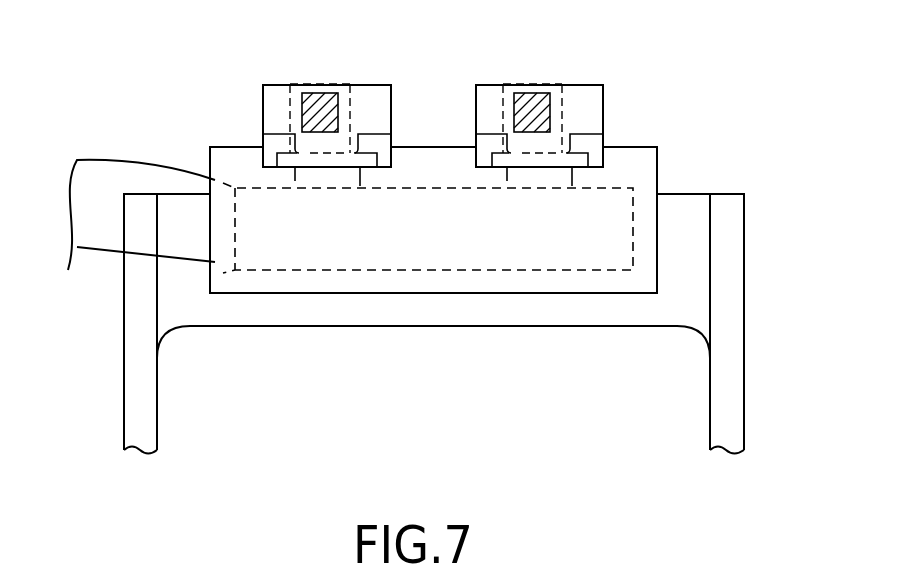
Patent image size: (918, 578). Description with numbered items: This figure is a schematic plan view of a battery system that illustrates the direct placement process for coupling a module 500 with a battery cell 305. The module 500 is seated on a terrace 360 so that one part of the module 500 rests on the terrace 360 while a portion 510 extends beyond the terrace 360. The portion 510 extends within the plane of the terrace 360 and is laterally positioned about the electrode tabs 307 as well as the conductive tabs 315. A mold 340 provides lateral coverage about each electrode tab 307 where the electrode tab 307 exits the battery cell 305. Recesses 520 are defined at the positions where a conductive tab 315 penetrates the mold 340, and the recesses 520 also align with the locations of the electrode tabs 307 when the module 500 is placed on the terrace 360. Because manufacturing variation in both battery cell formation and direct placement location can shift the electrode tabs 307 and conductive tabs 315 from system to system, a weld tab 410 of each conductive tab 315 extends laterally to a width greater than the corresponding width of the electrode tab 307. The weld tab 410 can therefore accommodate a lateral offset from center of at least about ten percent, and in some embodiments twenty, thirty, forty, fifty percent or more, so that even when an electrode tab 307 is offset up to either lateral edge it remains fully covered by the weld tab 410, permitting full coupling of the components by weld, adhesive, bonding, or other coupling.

The battery cell 305 is at (744, 398).
The electrode tab 307 is at (503, 85).
The conductive tab 315 is at (603, 105).
The mold 340 is at (657, 152).
The terrace 360 is at (744, 247).
The weld tab 410 is at (585, 85).
The module 500 is at (657, 188).
The portion 510 is at (228, 147).
The recess 520 is at (385, 166).